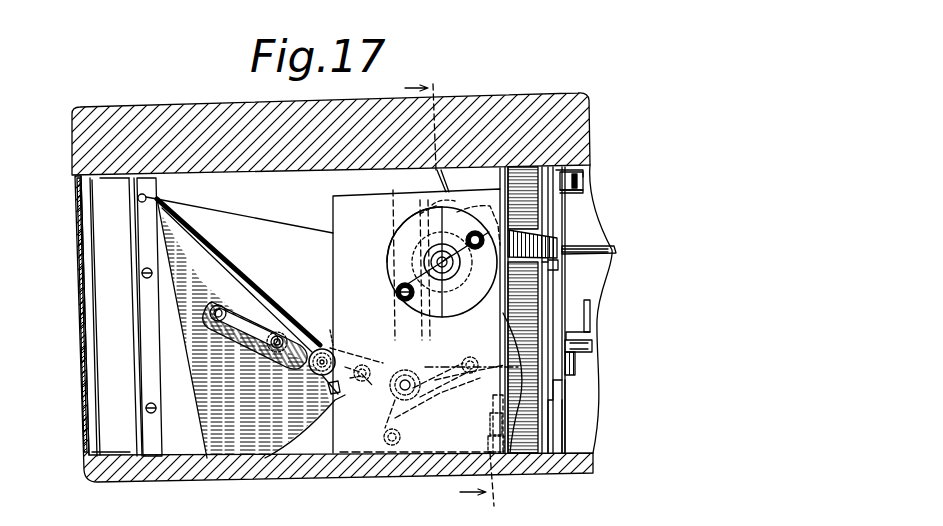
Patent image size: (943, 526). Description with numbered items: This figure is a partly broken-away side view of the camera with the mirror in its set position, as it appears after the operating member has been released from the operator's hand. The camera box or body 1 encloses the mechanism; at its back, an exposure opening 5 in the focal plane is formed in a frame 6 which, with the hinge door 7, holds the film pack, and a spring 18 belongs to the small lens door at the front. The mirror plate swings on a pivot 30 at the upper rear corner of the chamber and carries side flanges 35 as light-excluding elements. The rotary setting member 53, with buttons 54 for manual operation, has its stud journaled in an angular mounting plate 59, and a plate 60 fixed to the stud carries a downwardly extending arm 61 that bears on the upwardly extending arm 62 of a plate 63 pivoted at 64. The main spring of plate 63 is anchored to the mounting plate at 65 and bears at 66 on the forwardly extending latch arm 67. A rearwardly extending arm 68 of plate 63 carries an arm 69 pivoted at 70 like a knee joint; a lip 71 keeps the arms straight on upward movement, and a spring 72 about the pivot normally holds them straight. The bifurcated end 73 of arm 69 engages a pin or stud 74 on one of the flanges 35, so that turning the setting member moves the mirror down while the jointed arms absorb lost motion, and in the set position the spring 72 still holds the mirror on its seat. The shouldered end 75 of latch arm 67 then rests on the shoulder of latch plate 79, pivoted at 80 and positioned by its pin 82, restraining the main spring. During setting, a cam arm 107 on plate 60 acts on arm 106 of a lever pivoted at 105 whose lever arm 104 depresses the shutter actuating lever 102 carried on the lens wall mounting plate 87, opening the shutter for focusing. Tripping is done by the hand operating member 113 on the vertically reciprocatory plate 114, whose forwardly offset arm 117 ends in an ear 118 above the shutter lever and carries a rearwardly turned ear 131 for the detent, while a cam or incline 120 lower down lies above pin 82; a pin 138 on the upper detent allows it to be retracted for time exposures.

The box or body 1 is at (178, 106).
The spring 18 is at (453, 294).
The exposure opening 5 is at (133, 388).
The frame 6 is at (127, 317).
The hinge door 7 is at (78, 240).
The pivot 30 is at (156, 190).
The wings or side flanges 35 is at (243, 328).
The rotary setting member 53 is at (424, 252).
The buttons 54 is at (396, 289).
The angular mounting plate 59 is at (395, 232).
The plate 60 is at (332, 310).
The downwardly extending arm 61 is at (436, 318).
The upwardly extending arm 62 is at (380, 347).
The plate 63 is at (462, 406).
The pivot 64 is at (372, 420).
The anchor point 65 is at (383, 438).
The spring bearing point 66 is at (480, 352).
The latch arm 67 is at (480, 376).
The rearwardly extending arm 68 is at (392, 393).
The arm 69 is at (290, 362).
The pivot 70 is at (305, 394).
The lip 71 is at (332, 396).
The spring 72 is at (322, 346).
The bifurcated end 73 is at (265, 318).
The pin or stud 74 is at (212, 308).
The shouldered end 75 is at (503, 379).
The latch plate 79 is at (489, 424).
The pivot 80 is at (488, 440).
The pin 82 is at (593, 346).
The mounting plate 87 is at (560, 442).
The shutter actuating lever 102 is at (558, 268).
The lever arm 104 is at (558, 245).
The pivot 105 is at (479, 222).
The arm 106 is at (468, 180).
The cam arm 107 is at (428, 204).
The hand operating member 113 is at (578, 365).
The vertically reciprocatory plate 114 is at (572, 310).
The forwardly offset arm 117 is at (583, 172).
The forwardly projecting ear 118 is at (584, 185).
The cam or incline 120 is at (591, 310).
The rearwardly turned ear 131 is at (551, 310).
The pin 138 is at (610, 247).